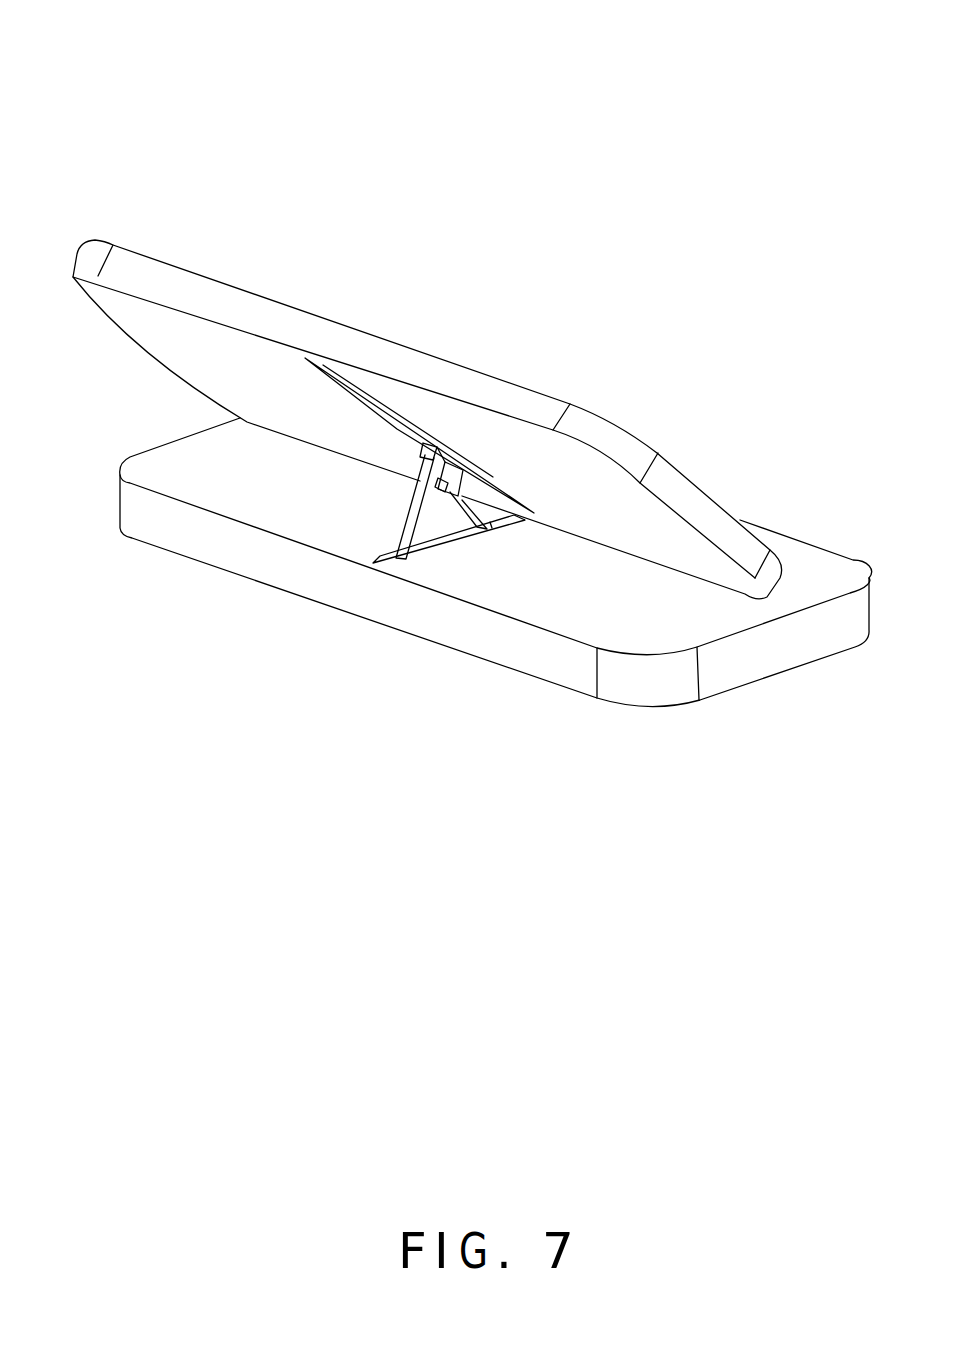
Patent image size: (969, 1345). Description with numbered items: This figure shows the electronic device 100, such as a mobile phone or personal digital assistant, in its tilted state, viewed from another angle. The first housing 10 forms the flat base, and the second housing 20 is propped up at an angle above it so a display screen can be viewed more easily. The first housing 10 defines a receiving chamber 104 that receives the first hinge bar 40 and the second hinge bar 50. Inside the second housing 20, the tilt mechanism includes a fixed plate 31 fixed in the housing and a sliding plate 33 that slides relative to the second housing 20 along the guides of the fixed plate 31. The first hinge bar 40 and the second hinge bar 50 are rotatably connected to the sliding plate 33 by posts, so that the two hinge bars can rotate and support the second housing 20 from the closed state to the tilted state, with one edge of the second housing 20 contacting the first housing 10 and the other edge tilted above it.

The electronic device 100 is at (472, 393).
The first housing 10 is at (752, 652).
The second housing 20 is at (222, 302).
The fixed plate 31 is at (383, 395).
The sliding plate 33 is at (452, 458).
The first hinge bar 40 is at (470, 527).
The second hinge bar 50 is at (403, 518).
The receiving chamber 104 is at (428, 547).